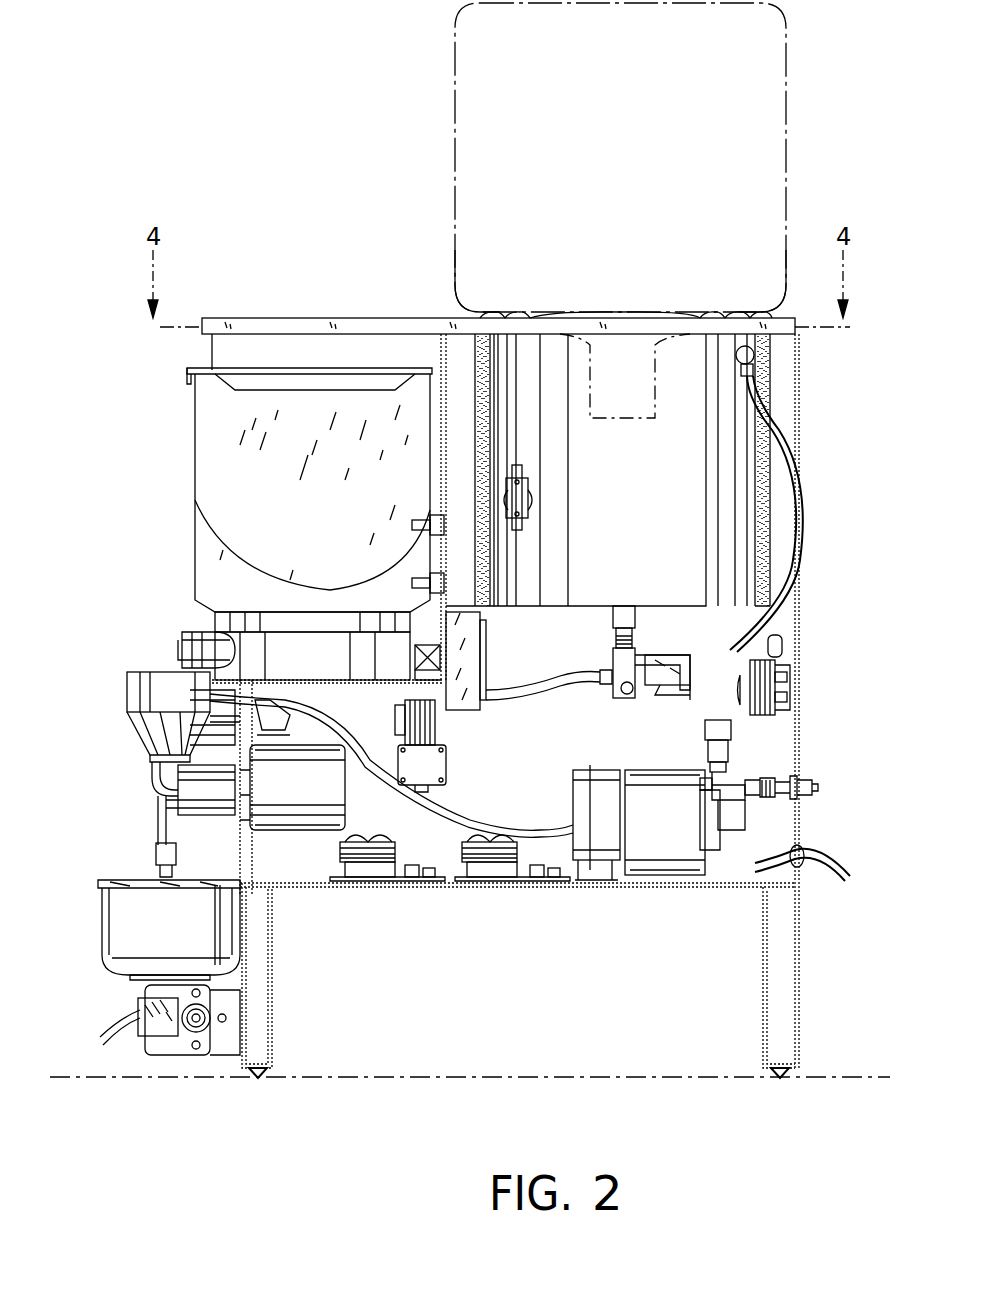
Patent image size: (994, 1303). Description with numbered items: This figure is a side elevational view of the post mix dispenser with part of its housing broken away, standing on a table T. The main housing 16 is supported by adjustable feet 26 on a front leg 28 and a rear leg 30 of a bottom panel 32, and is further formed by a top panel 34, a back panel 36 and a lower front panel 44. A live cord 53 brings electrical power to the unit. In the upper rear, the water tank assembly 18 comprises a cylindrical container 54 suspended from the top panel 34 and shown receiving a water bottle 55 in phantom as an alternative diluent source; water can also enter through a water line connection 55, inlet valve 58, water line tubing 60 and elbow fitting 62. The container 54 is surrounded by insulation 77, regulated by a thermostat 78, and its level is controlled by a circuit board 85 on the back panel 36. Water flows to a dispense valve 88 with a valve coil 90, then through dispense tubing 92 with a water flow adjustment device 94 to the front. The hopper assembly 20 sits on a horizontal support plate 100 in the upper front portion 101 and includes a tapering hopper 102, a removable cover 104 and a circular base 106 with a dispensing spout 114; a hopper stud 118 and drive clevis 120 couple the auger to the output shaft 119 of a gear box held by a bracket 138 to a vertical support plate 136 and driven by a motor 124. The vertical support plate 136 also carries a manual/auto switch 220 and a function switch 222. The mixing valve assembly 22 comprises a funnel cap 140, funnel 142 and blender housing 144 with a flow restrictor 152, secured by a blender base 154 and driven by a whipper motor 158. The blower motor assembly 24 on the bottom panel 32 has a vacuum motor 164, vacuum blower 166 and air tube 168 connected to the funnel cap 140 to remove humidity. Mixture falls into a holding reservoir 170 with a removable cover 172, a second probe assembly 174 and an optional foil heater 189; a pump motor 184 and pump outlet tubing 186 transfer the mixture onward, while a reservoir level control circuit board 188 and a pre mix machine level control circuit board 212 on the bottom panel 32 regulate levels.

The main housing 16 is at (362, 280).
The water tank assembly 18 is at (815, 486).
The dry concentrate hopper assembly 20 is at (160, 538).
The mixing valve assembly 22 is at (75, 812).
The blower motor assembly 24 is at (603, 920).
The adjustable feet 26 is at (262, 1078).
The front leg 28 is at (272, 980).
The rear leg 30 is at (763, 968).
The bottom panel 32 is at (712, 887).
The top panel 34 is at (243, 318).
The back panel 36 is at (796, 567).
The lower front panel 44 is at (250, 873).
The live cord 53 is at (830, 860).
The cylindrical container 54 is at (718, 606).
The water line connection 55 is at (455, 128).
The inlet valve 58 is at (742, 790).
The water line tubing 60 is at (782, 432).
The elbow fitting 62 is at (765, 364).
The insulation 77 is at (478, 356).
The thermostat 78 is at (530, 518).
The water tank level control circuit board 85 is at (790, 680).
The dispense valve 88 is at (636, 648).
The valve coil 90 is at (685, 690).
The dispense tubing 92 is at (528, 686).
The water flow adjustment device 94 is at (297, 718).
The horizontal support plate 100 is at (380, 683).
The upper front portion 101 is at (212, 354).
The hopper 102 is at (195, 466).
The removable cover 104 is at (190, 385).
The circular base 106 is at (295, 645).
The dispensing spout 114 is at (182, 652).
The hopper stud 118 is at (486, 663).
The output shaft 119 is at (470, 648).
The drive clevis 120 is at (428, 645).
The motor 124 is at (440, 768).
The vertical support plate 136 is at (466, 356).
The bracket 138 is at (485, 616).
The funnel cap 140 is at (127, 695).
The funnel 142 is at (150, 752).
The blender housing 144 is at (152, 782).
The flow restrictor 152 is at (156, 855).
The blender base 154 is at (180, 818).
The whipper motor 158 is at (285, 830).
The vacuum motor 164 is at (662, 780).
The vacuum blower 166 is at (585, 772).
The air tube 168 is at (215, 700).
The holding reservoir 170 is at (108, 965).
The removable cover 172 is at (100, 883).
The second probe assembly 174 is at (220, 888).
The motor 184 is at (185, 1055).
The pump outlet tubing 186 is at (103, 1040).
The reservoir level control circuit board 188 is at (386, 883).
The foil heater 189 is at (132, 980).
The pre mix machine level control circuit board 212 is at (524, 883).
The manual/auto switch 220 is at (418, 578).
The function switch 222 is at (418, 520).
The table T is at (828, 1077).